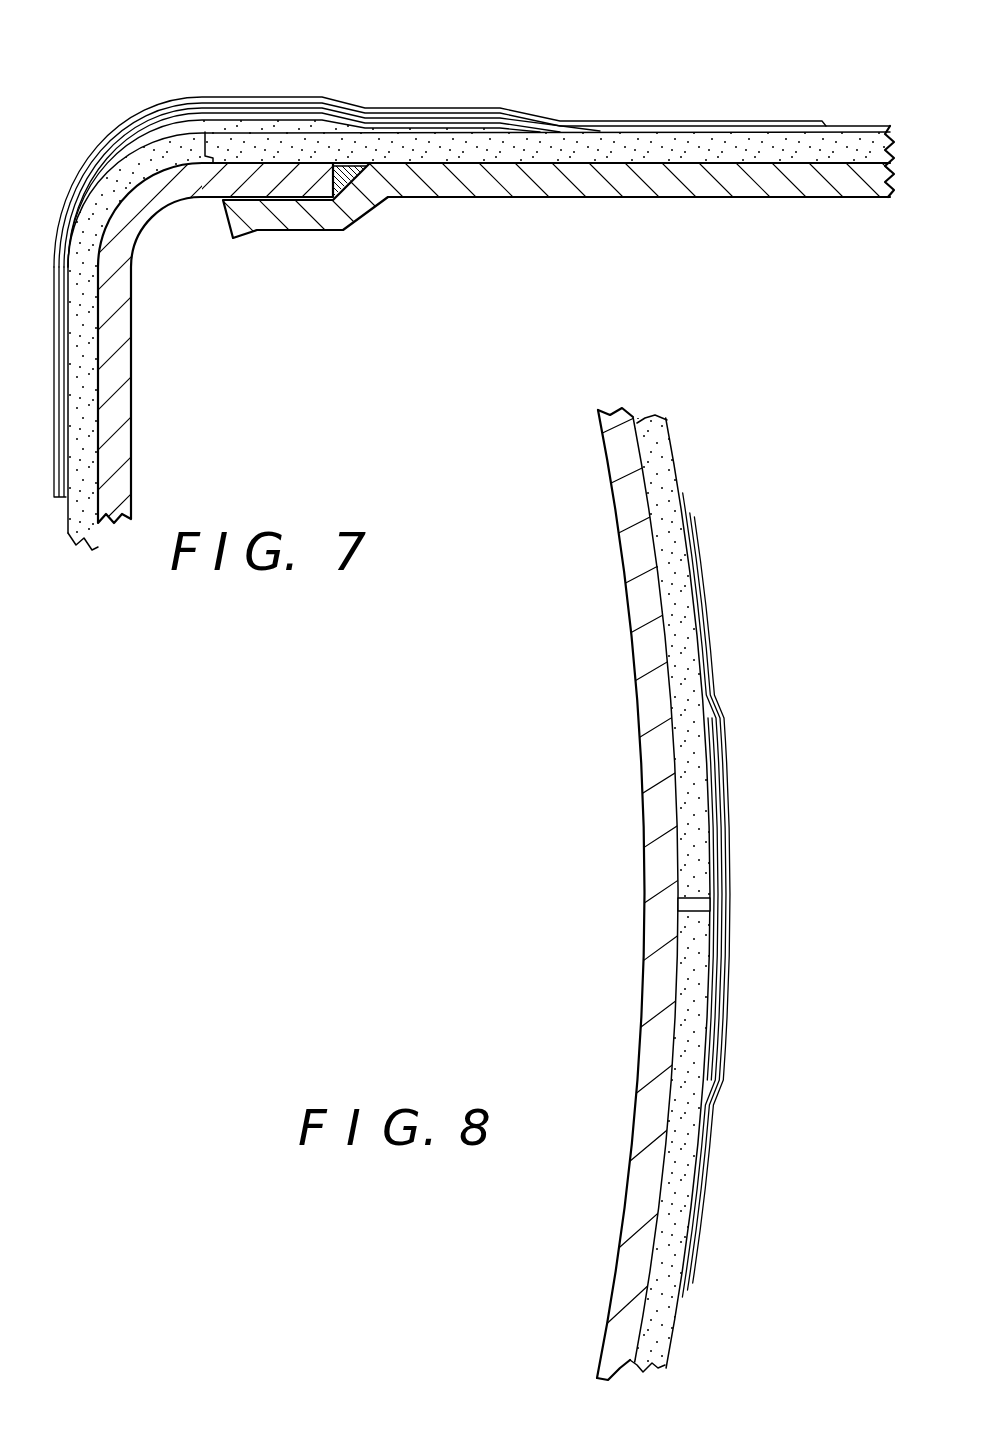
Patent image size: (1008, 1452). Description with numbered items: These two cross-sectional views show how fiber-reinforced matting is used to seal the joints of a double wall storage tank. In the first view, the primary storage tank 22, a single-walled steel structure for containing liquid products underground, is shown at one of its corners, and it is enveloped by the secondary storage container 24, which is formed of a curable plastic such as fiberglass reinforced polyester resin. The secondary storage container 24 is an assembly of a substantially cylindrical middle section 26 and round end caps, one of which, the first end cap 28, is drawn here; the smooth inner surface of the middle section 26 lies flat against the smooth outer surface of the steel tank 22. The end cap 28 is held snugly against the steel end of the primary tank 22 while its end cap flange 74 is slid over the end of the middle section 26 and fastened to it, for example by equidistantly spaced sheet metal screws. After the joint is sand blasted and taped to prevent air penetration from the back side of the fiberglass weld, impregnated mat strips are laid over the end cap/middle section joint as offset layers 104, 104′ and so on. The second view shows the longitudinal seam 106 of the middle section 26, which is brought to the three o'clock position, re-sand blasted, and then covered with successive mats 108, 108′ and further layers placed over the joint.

In FIG. 7, the primary storage tank 22 is at (672, 196).
In FIG. 8, the primary storage tank 22 is at (645, 930).
In FIG. 8, the secondary storage container 24 is at (660, 889).
In FIG. 7, the middle section 26 is at (857, 132).
In FIG. 8, the middle section 26 is at (667, 1332).
In FIG. 7, the first end cap 28 is at (131, 176).
In FIG. 7, the end cap flange 74 is at (280, 123).
In FIG. 7, the offset layer of impregnated mat strip 104 is at (514, 128).
In FIG. 7, the offset layer of impregnated mat strip 104′ is at (490, 128).
In FIG. 8, the longitudinal seam 106 is at (703, 903).
In FIG. 8, the mat 108 is at (710, 712).
In FIG. 8, the mat 108′ is at (722, 734).